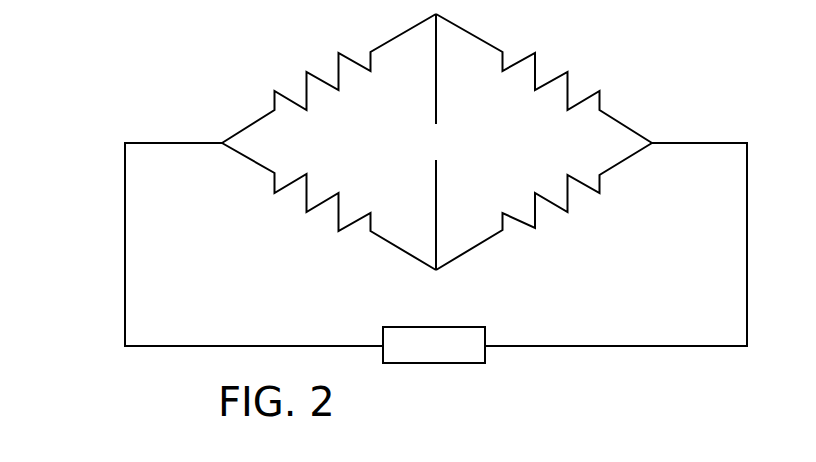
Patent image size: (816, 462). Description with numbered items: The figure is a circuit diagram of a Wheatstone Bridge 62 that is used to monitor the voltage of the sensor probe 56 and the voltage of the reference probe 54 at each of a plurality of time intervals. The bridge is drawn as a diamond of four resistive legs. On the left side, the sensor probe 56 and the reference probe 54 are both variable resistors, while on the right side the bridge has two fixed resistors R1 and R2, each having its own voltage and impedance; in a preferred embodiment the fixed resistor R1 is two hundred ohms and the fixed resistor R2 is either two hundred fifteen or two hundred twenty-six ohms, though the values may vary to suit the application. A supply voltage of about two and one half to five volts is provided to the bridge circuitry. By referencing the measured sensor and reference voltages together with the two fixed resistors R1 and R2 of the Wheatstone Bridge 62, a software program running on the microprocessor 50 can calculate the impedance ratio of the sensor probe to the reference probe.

The Wheatstone Bridge 62 is at (390, 208).
The sensor probe 56 is at (307, 72).
The reference probe 54 is at (312, 208).
The fixed resistor R1 is at (536, 60).
The fixed resistor R2 is at (536, 226).
The microprocessor 50 is at (470, 364).